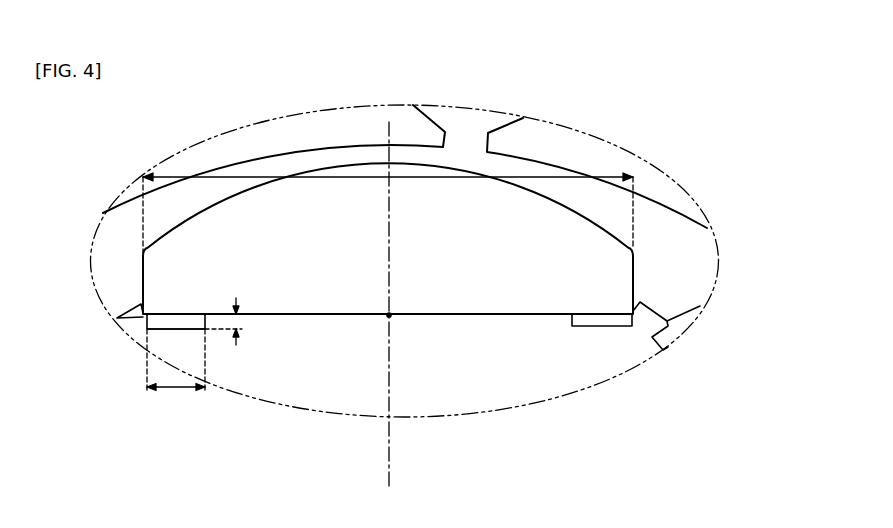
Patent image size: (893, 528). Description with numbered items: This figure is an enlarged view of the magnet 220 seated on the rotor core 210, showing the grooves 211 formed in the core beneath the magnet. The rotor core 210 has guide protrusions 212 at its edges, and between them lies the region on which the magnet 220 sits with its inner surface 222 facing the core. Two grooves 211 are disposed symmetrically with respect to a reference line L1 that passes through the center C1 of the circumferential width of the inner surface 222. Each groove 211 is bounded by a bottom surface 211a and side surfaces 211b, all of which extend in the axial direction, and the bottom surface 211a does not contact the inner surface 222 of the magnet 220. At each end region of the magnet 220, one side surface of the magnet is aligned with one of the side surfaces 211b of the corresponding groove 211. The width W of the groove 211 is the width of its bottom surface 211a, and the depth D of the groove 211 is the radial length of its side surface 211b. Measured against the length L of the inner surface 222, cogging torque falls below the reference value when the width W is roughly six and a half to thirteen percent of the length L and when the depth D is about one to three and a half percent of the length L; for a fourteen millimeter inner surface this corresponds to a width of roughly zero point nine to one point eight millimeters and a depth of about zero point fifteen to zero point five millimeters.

The rotor core 210 is at (455, 368).
The groove 211 is at (173, 323).
The bottom surface 211a is at (190, 330).
The side surface 211b is at (143, 316).
The guide protrusion 212 is at (665, 304).
The magnet 220 is at (517, 218).
The inner surface 222 is at (510, 316).
The length of the inner surface L is at (258, 177).
The reference line L1 is at (389, 470).
The center C1 is at (389, 318).
The depth of the groove D is at (238, 322).
The width of the groove W is at (175, 389).